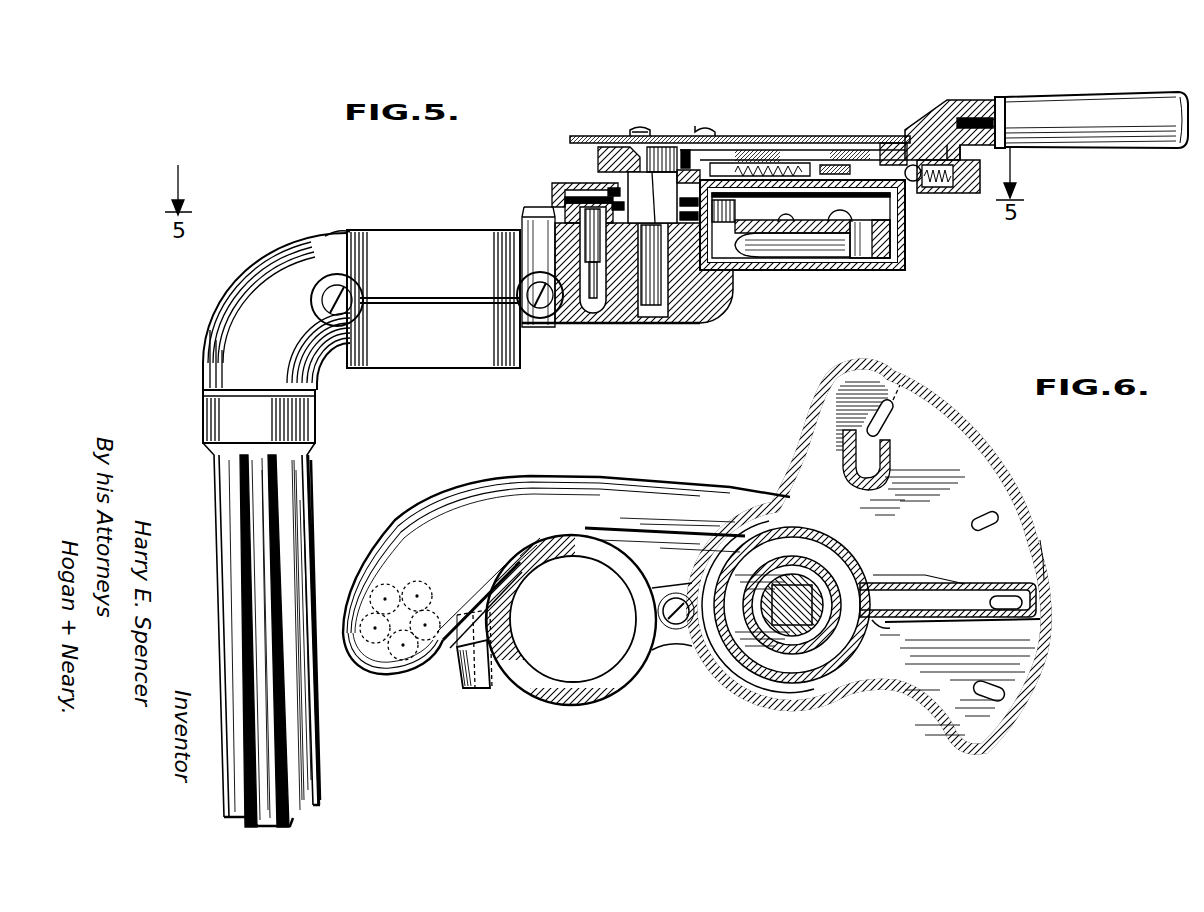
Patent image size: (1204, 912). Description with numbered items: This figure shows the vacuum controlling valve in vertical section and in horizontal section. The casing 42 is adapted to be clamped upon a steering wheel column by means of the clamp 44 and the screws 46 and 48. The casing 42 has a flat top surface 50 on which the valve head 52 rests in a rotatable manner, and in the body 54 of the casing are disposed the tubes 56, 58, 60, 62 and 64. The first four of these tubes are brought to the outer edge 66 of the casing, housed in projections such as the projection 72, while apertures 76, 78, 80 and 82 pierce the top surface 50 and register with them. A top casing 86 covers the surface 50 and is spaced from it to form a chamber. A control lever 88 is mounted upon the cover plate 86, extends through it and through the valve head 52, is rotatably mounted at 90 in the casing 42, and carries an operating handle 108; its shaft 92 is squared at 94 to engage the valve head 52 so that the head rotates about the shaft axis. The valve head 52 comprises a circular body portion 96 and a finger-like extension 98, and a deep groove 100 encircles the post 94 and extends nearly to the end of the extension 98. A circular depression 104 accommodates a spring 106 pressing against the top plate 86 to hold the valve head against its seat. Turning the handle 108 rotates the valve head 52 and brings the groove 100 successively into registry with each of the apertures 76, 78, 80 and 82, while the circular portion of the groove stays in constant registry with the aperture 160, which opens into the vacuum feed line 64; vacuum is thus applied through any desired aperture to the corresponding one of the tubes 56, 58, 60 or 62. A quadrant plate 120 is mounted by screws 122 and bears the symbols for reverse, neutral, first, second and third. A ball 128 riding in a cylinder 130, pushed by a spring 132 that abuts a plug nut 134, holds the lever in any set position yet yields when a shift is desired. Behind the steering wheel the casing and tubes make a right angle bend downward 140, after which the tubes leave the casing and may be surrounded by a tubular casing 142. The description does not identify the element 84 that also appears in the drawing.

In FIG. 5, the casing 42 is at (713, 285).
In FIG. 6, the casing 42 is at (607, 492).
In FIG. 5, the clamp 44 is at (440, 357).
In FIG. 6, the clamp 44 is at (623, 670).
In FIG. 5, the screw 46 is at (335, 290).
In FIG. 6, the screw 46 is at (515, 680).
In FIG. 5, the screw 48 is at (522, 283).
In FIG. 5, the flat top surface 50 is at (783, 218).
In FIG. 6, the flat top surface 50 is at (963, 452).
In FIG. 5, the valve head 52 is at (816, 195).
In FIG. 6, the valve head 52 is at (855, 548).
In FIG. 5, the body of the casing 54 is at (333, 237).
In FIG. 5, the tube 56 is at (228, 583).
In FIG. 6, the tube 56 is at (375, 636).
In FIG. 5, the tube 58 is at (262, 552).
In FIG. 6, the tube 58 is at (402, 655).
In FIG. 5, the tube 60 is at (795, 250).
In FIG. 6, the tube 60 is at (384, 596).
In FIG. 5, the tube 62 is at (297, 740).
In FIG. 6, the tube 62 is at (432, 640).
In FIG. 6, the vacuum feed line 64 is at (425, 592).
In FIG. 6, the outer edge of casing 66 is at (1034, 547).
In FIG. 5, the projection 72 is at (893, 270).
In FIG. 6, the aperture 76 is at (872, 420).
In FIG. 5, the aperture 78 is at (808, 245).
In FIG. 6, the aperture 78 is at (997, 513).
In FIG. 6, the aperture 80 is at (1023, 600).
In FIG. 6, the aperture 82 is at (1007, 693).
In FIG. 5, the liner 84 is at (903, 249).
In FIG. 5, the top casing 86 is at (760, 197).
In FIG. 5, the control lever 88 is at (745, 160).
In FIG. 5, the rotatable mounting 90 is at (657, 328).
In FIG. 5, the shaft 92 is at (650, 280).
In FIG. 5, the squared post 94 is at (640, 195).
In FIG. 6, the squared post 94 is at (793, 620).
In FIG. 6, the circular body portion 96 is at (803, 532).
In FIG. 6, the finger-like extension 98 is at (930, 583).
In FIG. 6, the deep groove 100 is at (890, 628).
In FIG. 5, the circular depression 104 is at (580, 187).
In FIG. 5, the spring 106 is at (707, 160).
In FIG. 5, the operating handle 108 is at (1068, 107).
In FIG. 5, the quadrant plate 120 is at (797, 138).
In FIG. 5, the screws 122 is at (642, 138).
In FIG. 5, the ball 128 is at (927, 197).
In FIG. 5, the cylinder 130 is at (960, 197).
In FIG. 5, the spring 132 is at (930, 165).
In FIG. 5, the plug nut 134 is at (983, 176).
In FIG. 5, the right angle bend 140 is at (232, 305).
In FIG. 5, the tubular casing 142 is at (300, 465).
In FIG. 5, the aperture 160 is at (563, 213).
In FIG. 6, the aperture 160 is at (742, 610).